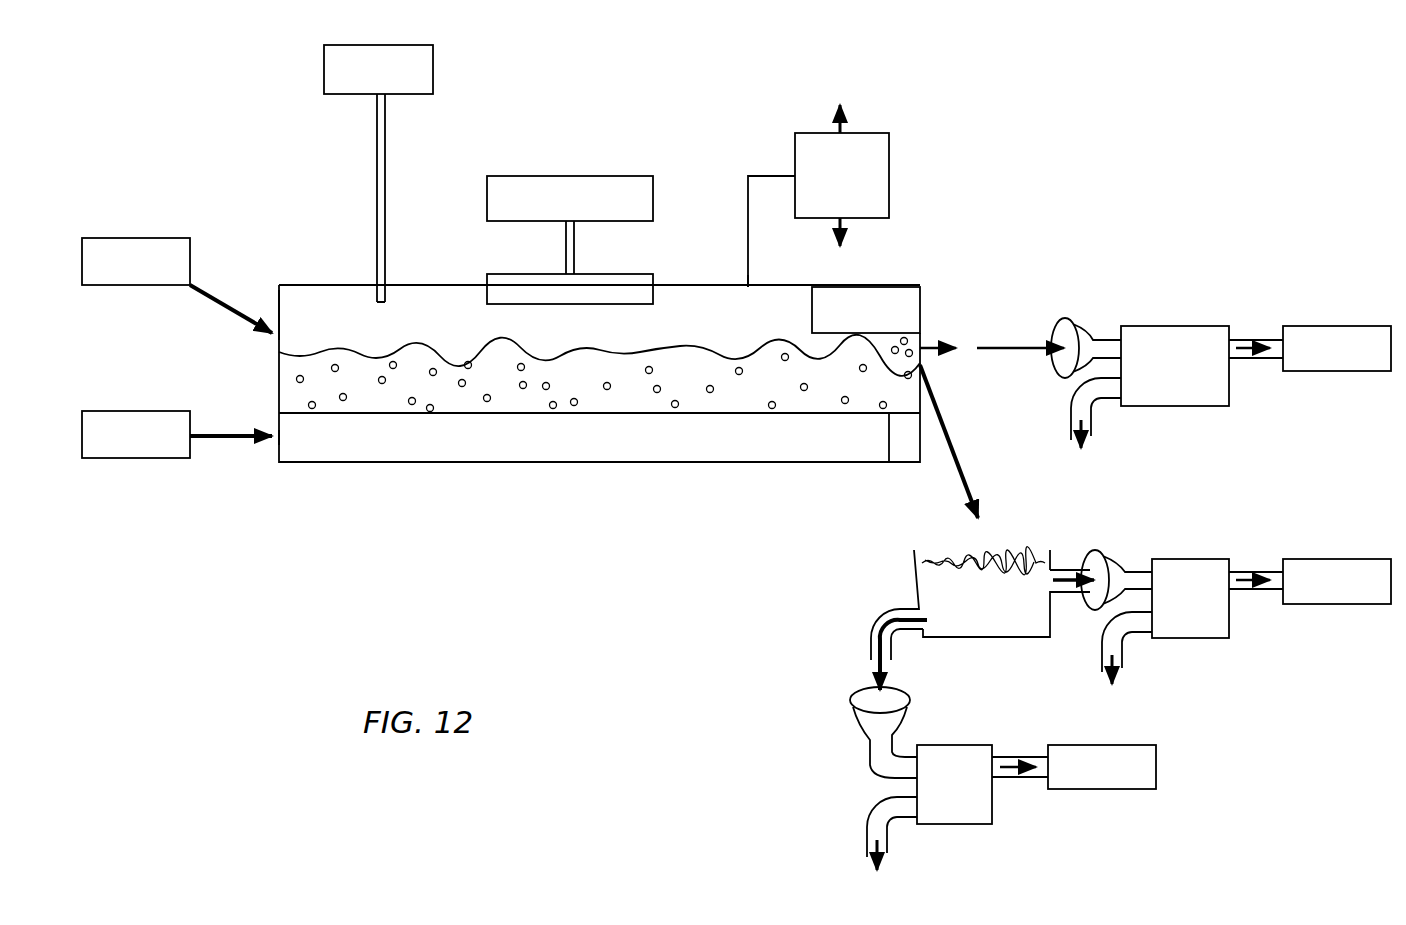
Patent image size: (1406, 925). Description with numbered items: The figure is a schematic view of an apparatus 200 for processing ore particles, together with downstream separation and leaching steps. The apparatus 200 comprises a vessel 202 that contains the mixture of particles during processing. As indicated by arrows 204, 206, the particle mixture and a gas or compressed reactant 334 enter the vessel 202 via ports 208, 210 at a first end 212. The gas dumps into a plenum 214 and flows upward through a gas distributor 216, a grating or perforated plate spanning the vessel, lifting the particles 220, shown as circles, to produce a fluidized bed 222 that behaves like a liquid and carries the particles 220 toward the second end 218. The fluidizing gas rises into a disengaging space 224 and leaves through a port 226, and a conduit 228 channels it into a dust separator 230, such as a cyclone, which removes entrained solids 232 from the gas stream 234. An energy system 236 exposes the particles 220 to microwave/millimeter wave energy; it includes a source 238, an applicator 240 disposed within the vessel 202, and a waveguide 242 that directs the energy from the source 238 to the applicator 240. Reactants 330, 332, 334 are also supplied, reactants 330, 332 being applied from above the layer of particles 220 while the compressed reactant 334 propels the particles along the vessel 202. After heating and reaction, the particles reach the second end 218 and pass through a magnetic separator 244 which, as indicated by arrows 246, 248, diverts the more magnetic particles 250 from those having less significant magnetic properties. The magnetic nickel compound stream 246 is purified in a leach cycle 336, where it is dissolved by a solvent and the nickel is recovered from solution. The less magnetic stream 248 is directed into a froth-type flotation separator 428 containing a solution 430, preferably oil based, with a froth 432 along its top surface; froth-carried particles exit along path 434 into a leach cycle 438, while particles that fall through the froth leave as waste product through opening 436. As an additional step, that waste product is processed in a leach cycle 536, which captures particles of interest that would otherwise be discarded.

The apparatus 200 is at (887, 63).
The vessel 202 is at (345, 285).
The arrow 204 is at (215, 296).
The arrow 206 is at (240, 440).
The port 208 is at (283, 340).
The port 210 is at (281, 437).
The first end 212 is at (220, 390).
The plenum 214 is at (760, 452).
The gas distributor 216 is at (345, 413).
The second end 218 is at (992, 278).
The particles 220 is at (574, 404).
The fluidized bed 222 is at (697, 398).
The disengaging space 224 is at (425, 330).
The port 226 is at (745, 290).
The conduit 228 is at (748, 203).
The dust separator 230 is at (889, 160).
The entrained solids 232 is at (845, 233).
The gas stream 234 is at (835, 118).
The energy system 236 is at (474, 170).
The source 238 is at (625, 176).
The applicator 240 is at (487, 278).
The waveguide 242 is at (574, 244).
The magnetic separator 244 is at (912, 296).
The arrow 246 is at (1028, 345).
The arrow 248 is at (942, 402).
The magnetic particles 250 is at (888, 354).
The reactant 330 is at (428, 45).
The reactant 332 is at (118, 238).
The reactant 334 is at (120, 411).
The leach cycle 336 is at (1188, 326).
The flotation separator 428 is at (915, 578).
The solution 430 is at (1010, 578).
The froth 432 is at (970, 553).
The exit 434 is at (1068, 600).
The opening 436 is at (850, 628).
The leach cycle 438 is at (1206, 559).
The leach cycle 536 is at (975, 745).